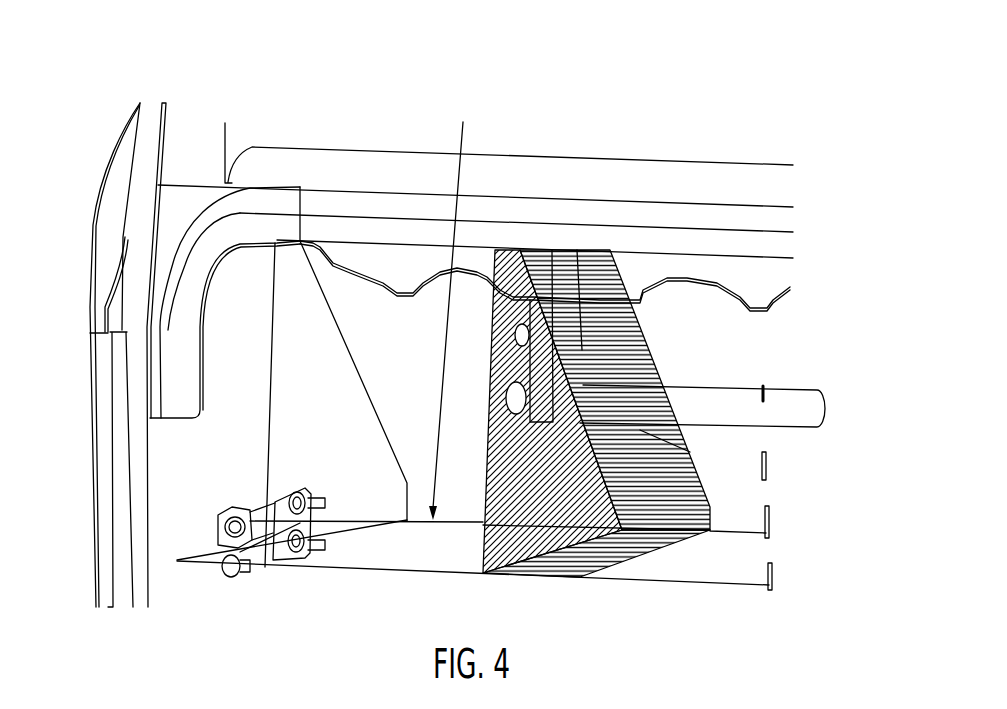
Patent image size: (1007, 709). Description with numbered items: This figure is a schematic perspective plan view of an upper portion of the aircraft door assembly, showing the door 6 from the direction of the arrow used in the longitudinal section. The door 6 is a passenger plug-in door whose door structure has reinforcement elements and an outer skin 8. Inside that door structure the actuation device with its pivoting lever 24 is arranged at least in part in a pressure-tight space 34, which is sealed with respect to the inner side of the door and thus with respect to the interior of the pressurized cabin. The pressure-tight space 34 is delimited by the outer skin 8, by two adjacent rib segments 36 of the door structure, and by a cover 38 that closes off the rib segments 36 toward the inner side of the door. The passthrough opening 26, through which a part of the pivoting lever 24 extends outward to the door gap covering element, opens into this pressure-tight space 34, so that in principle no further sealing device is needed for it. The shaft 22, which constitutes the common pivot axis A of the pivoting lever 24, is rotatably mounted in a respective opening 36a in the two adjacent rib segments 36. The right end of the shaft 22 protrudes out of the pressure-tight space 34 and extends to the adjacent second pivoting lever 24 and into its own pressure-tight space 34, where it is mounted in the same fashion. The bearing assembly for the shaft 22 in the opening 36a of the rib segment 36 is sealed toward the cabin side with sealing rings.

The aircraft door 6 is at (128, 128).
The outer skin 8 is at (250, 300).
The shaft 22 is at (502, 398).
The pivoting lever 24 is at (603, 330).
The passthrough opening 26 is at (484, 430).
The pressure-tight space 34 is at (655, 486).
The rib segment 36 is at (593, 309).
The opening 36a is at (500, 382).
The cover 38 is at (677, 445).
The pivot axis A is at (482, 427).